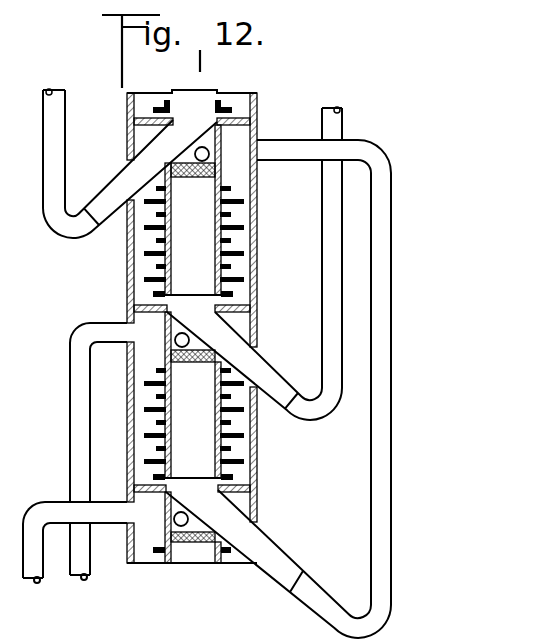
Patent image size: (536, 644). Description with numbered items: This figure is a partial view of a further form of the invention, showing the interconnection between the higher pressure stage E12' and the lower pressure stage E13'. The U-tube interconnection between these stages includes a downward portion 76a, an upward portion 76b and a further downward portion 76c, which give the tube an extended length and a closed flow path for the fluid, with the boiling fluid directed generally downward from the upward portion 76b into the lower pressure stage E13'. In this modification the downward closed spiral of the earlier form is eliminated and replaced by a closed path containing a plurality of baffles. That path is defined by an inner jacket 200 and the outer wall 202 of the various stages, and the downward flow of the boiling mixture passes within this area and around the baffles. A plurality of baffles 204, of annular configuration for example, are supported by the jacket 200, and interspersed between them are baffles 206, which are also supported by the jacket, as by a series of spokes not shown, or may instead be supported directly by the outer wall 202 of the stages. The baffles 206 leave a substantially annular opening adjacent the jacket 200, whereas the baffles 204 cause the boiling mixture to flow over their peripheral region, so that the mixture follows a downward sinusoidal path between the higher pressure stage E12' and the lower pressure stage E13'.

The downward portion 76a is at (270, 548).
The upward portion 76b is at (375, 498).
The further downward portion 76c is at (146, 285).
The inner jacket 200 is at (222, 247).
The outer wall 202 is at (256, 297).
The baffles 204 is at (234, 269).
The baffles 206 is at (233, 227).
The higher pressure stage E12' is at (243, 396).
The lower pressure stage E13' is at (139, 214).